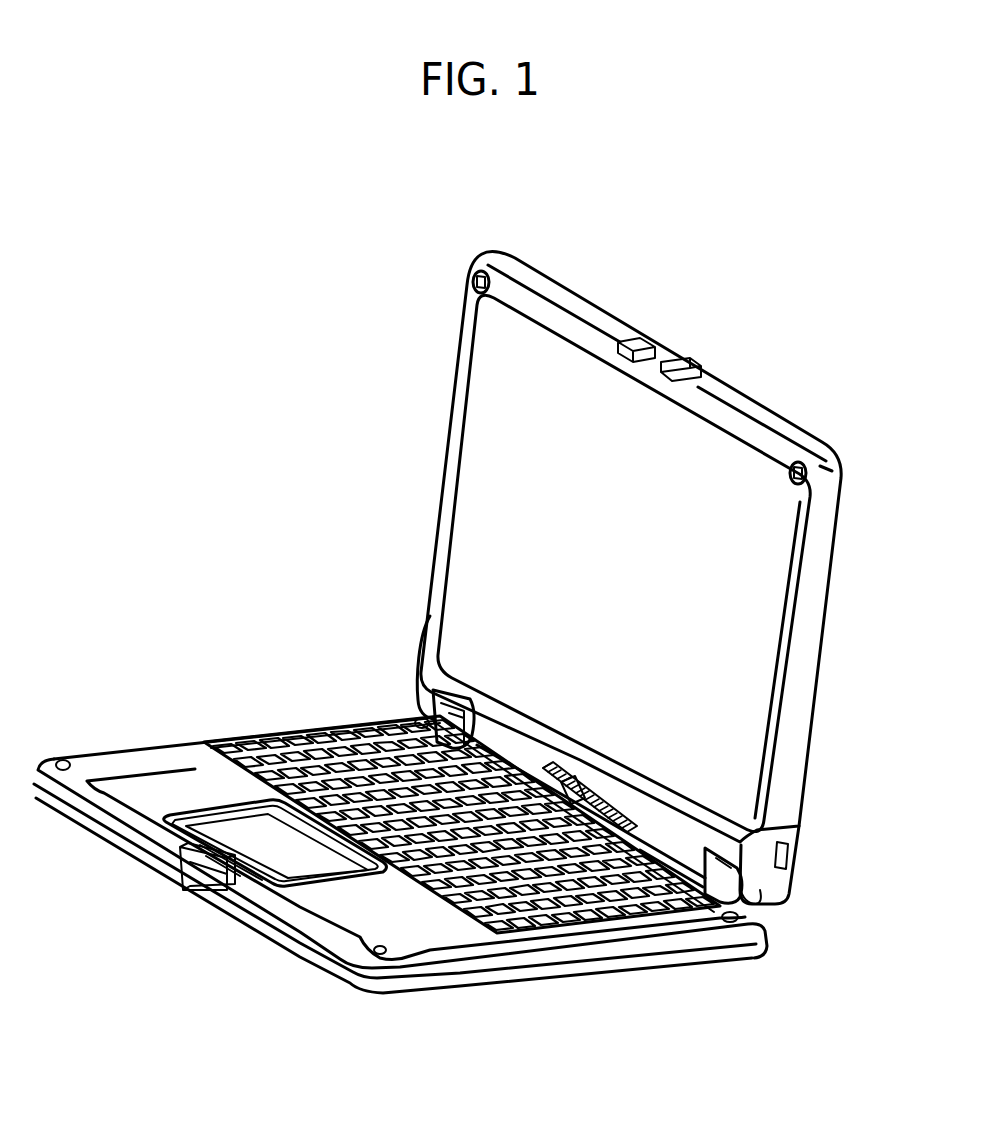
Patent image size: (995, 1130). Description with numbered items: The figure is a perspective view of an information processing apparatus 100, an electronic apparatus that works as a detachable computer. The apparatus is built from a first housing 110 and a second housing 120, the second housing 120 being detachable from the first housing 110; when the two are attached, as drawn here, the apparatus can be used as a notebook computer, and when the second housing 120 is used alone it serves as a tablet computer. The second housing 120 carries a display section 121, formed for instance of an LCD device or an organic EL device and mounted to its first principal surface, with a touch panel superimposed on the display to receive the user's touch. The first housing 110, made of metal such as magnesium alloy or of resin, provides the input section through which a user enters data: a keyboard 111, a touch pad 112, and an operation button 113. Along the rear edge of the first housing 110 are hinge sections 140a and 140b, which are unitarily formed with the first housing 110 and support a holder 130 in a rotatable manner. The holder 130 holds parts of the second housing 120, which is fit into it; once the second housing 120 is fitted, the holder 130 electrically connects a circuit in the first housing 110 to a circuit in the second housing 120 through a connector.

The information processing apparatus 100 is at (189, 400).
The first housing 110 is at (107, 840).
The keyboard 111 is at (308, 748).
The touch pad 112 is at (262, 830).
The operation button 113 is at (190, 823).
The second housing 120 is at (708, 372).
The display section 121 is at (492, 418).
The holder 130 is at (421, 664).
The hinge section 140a is at (422, 712).
The hinge section 140b is at (750, 893).